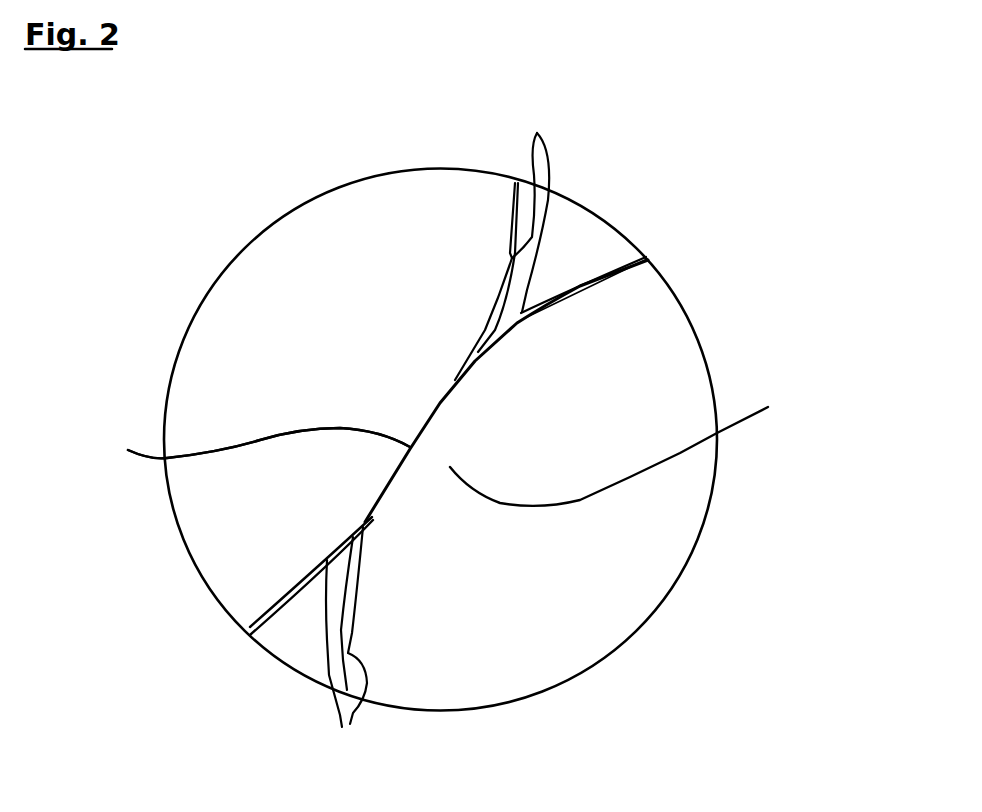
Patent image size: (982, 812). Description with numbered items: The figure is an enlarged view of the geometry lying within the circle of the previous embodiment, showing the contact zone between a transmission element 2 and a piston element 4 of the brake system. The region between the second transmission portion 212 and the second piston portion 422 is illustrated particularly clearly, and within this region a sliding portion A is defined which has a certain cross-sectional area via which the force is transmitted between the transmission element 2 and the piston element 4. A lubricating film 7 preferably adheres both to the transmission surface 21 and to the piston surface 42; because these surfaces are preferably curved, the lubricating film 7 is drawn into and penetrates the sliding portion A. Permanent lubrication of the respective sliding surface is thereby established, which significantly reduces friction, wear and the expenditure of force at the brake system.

The transmission element 2 is at (302, 270).
The piston element 4 is at (640, 293).
The lubricating film 7 is at (537, 79).
The transmission surface 21 is at (315, 587).
The piston surface 42 is at (524, 310).
The second transmission portion 212 is at (100, 446).
The second piston portion 422 is at (103, 487).
The sliding portion A is at (821, 415).